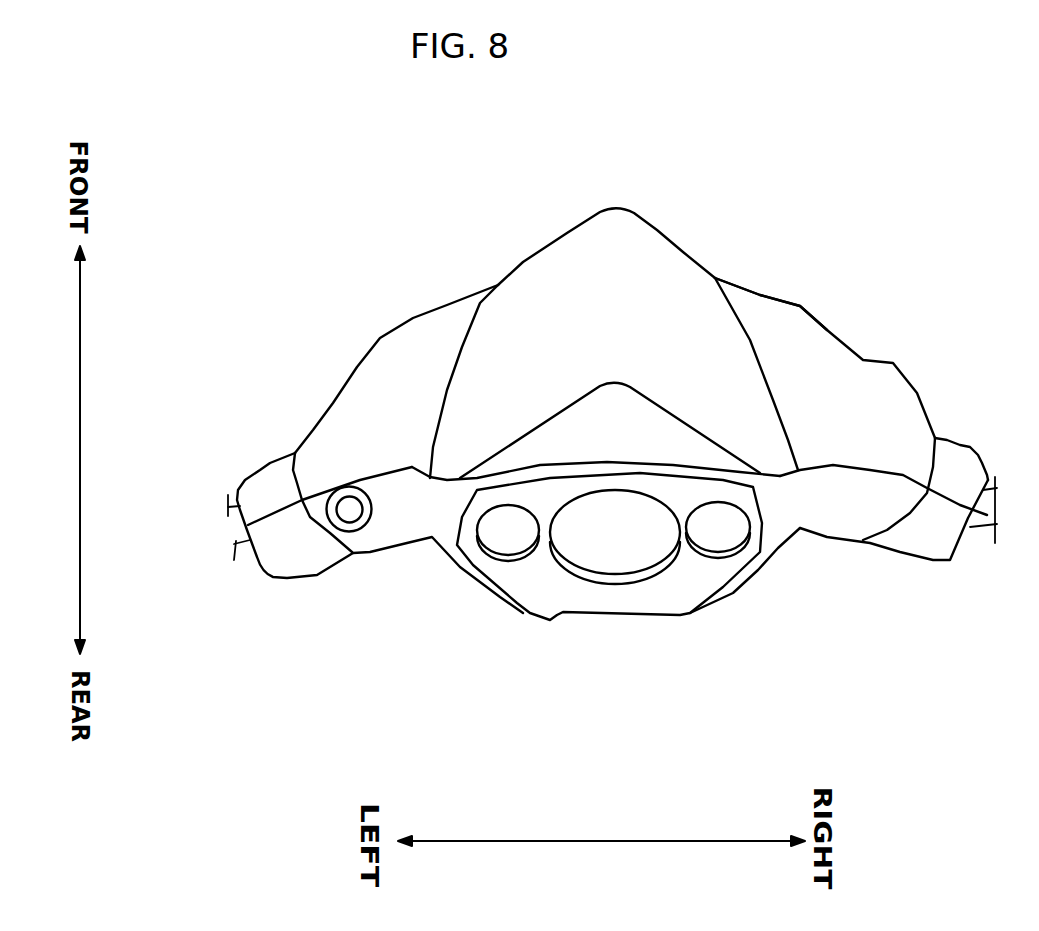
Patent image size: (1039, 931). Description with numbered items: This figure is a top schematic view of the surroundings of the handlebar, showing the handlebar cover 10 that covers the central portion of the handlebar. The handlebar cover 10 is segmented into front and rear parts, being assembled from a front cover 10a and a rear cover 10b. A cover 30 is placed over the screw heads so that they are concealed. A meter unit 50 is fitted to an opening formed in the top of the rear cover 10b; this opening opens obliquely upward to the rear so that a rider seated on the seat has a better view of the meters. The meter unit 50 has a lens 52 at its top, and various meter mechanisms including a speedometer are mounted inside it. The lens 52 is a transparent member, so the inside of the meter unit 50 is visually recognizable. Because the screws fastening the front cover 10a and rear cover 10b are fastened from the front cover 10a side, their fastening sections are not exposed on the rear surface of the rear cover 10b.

The handlebar cover 10 is at (895, 364).
The front cover 10a is at (783, 317).
The rear cover 10b is at (815, 517).
The cover 30 is at (675, 277).
The meter unit 50 is at (529, 608).
The lens 52 is at (593, 605).